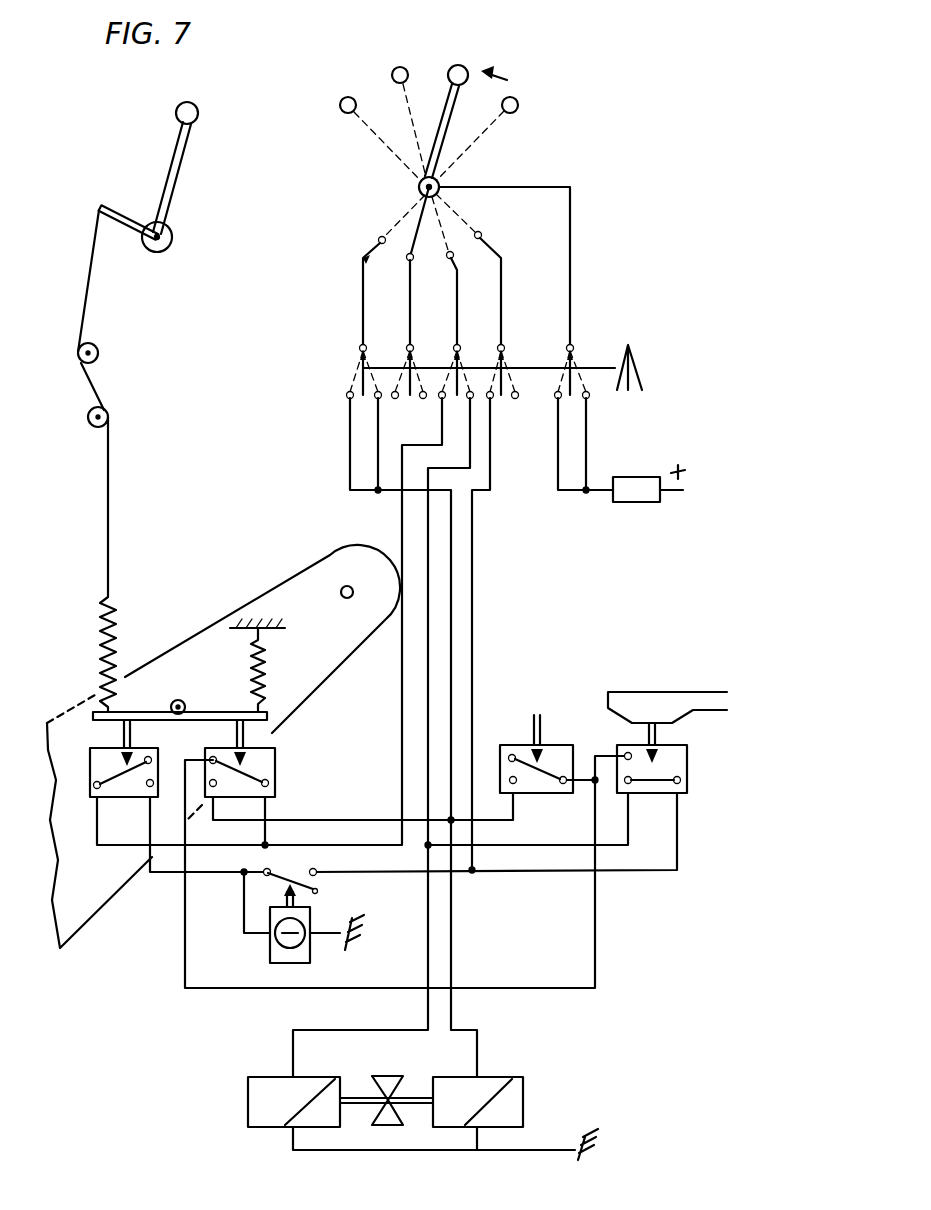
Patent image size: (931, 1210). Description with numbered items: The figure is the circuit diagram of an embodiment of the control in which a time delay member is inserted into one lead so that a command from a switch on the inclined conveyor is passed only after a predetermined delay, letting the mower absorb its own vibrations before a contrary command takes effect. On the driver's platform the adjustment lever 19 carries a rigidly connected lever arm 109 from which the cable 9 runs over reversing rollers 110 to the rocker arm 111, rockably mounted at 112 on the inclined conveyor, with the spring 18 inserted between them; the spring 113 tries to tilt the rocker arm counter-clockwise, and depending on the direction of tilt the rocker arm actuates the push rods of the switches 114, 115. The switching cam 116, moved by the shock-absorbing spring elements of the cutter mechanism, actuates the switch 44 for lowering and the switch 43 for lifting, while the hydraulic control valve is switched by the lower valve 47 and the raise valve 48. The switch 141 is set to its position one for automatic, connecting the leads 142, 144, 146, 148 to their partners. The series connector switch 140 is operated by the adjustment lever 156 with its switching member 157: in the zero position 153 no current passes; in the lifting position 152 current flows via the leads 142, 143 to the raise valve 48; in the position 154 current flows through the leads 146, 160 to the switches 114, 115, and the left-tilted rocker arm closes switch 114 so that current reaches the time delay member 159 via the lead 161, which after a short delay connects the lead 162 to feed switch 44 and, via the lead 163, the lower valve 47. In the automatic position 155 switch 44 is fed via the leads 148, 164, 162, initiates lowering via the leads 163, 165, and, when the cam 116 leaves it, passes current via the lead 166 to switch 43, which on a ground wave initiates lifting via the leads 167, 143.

The cable 9 is at (90, 290).
The spring 18 is at (115, 618).
The adjustment lever 19 is at (177, 162).
The switch for lifting 43 is at (512, 758).
The switch for lowering 44 is at (687, 757).
The lower valve 47 is at (248, 1082).
The raise valve 48 is at (515, 1087).
The lever arm 109 is at (102, 205).
The reversing rollers 110 is at (105, 405).
The rocker arm 111 is at (153, 704).
The rocker arm pivot 112 is at (183, 703).
The spring 113 is at (267, 677).
The switch 114 is at (90, 763).
The switch 115 is at (275, 753).
The switching cam 116 is at (658, 700).
The series connector switch 140 is at (438, 183).
The switch 141 is at (593, 365).
The lead 142 is at (362, 302).
The lead 143 is at (350, 446).
The lead 144 is at (408, 325).
The lead 146 is at (455, 328).
The lead 148 is at (503, 332).
The locked position for lifting 152 is at (518, 106).
The zero position 153 is at (447, 80).
The position for Position 154 is at (392, 78).
The position for Automatic 155 is at (340, 106).
The adjustment lever 156 is at (512, 71).
The switching member 157 is at (417, 237).
The time delay member 159 is at (272, 950).
The lead 160 is at (402, 548).
The lead 161 is at (152, 873).
The lead 162 is at (500, 870).
The lead 163 is at (557, 845).
The lead 164 is at (472, 603).
The lead 165 is at (428, 900).
The lead 166 is at (595, 750).
The lead 167 is at (518, 818).